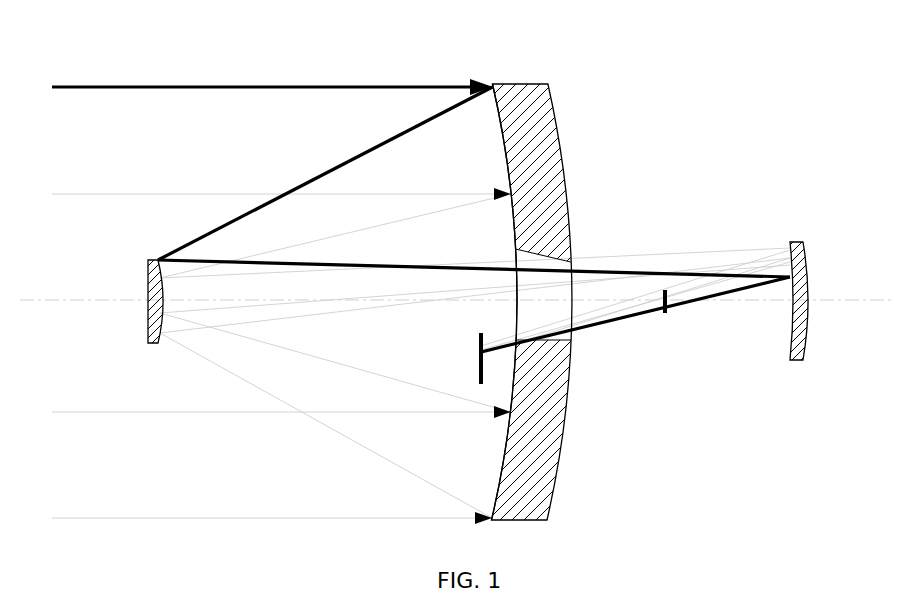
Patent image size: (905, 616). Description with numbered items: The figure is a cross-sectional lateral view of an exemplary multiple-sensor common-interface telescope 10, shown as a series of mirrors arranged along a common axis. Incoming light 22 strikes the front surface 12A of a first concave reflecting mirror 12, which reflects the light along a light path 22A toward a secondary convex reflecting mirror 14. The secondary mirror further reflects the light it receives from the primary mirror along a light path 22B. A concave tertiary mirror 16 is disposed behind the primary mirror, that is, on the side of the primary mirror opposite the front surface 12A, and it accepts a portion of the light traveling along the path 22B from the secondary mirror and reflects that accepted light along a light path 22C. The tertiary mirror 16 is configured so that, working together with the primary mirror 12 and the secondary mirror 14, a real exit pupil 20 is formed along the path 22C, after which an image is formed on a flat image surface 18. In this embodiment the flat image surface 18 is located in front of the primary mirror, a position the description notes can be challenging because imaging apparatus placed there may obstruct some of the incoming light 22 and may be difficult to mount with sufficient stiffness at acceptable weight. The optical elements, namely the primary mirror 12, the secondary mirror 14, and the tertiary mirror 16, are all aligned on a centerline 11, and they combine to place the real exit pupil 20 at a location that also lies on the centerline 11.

The multiple-sensor common-interface telescope 10 is at (421, 18).
The centerline 11 is at (70, 300).
The first concave reflecting mirror 12 is at (553, 108).
The front surface 12A is at (482, 125).
The secondary convex reflecting mirror 14 is at (152, 284).
The tertiary mirror 16 is at (807, 272).
The flat image surface 18 is at (481, 373).
The real exit pupil 20 is at (663, 308).
The incoming light 22 is at (218, 84).
The light path 22A is at (192, 242).
The light path 22B is at (366, 268).
The light path 22C is at (738, 292).